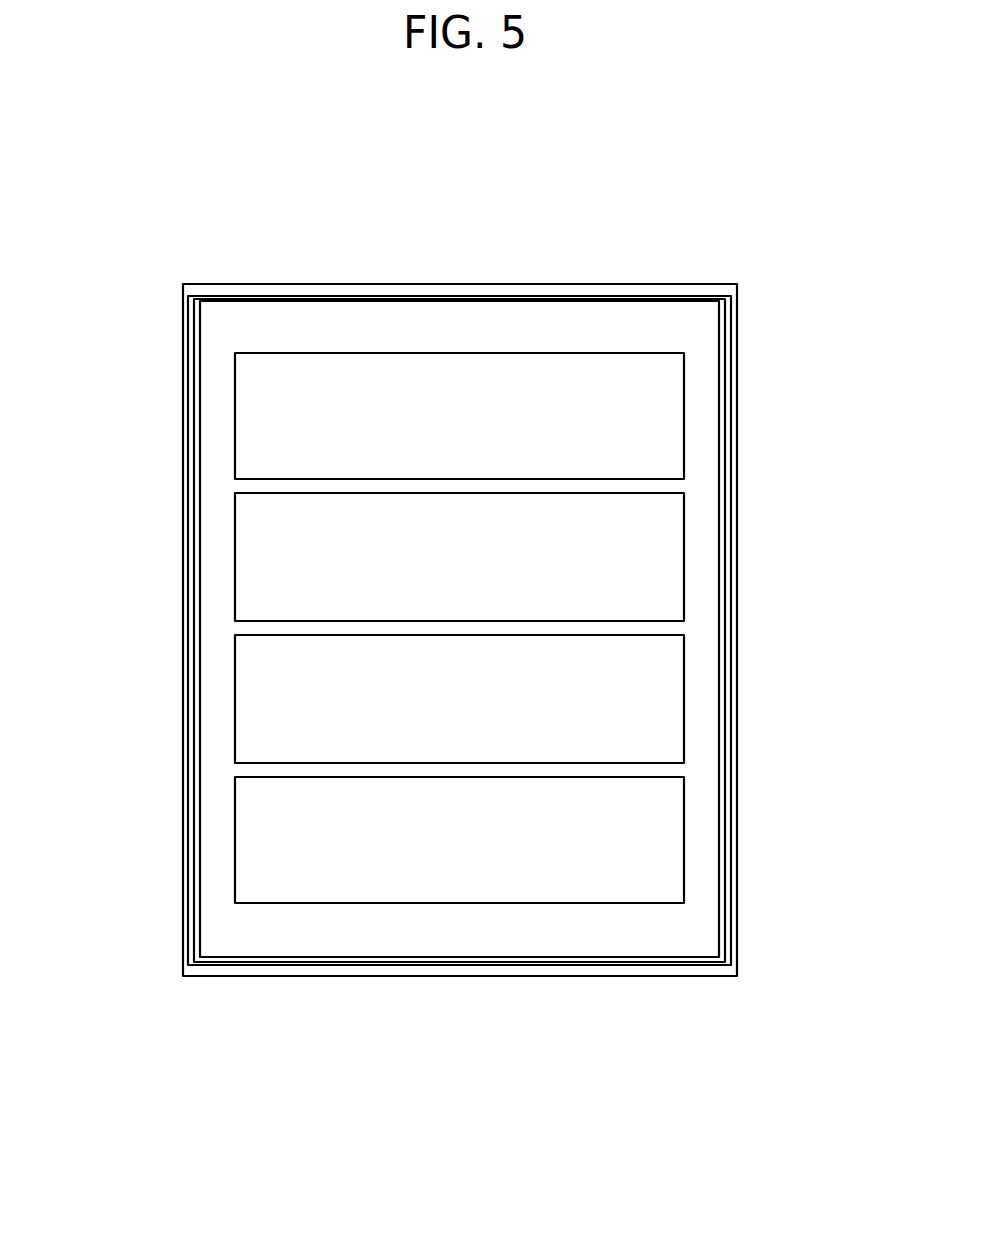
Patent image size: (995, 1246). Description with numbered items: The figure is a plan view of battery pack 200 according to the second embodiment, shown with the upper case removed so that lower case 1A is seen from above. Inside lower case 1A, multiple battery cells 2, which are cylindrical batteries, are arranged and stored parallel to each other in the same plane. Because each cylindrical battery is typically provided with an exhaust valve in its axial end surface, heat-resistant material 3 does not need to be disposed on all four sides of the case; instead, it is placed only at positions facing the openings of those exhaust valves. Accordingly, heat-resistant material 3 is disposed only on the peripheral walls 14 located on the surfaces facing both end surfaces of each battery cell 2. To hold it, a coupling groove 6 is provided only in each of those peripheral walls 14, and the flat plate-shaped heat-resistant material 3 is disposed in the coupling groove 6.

The battery pack 200 is at (685, 198).
The lower case 1A is at (273, 263).
The battery cell 2 is at (440, 445).
The heat-resistant material 3 is at (192, 638).
The coupling groove 6 is at (187, 572).
The peripheral wall 14 is at (450, 292).